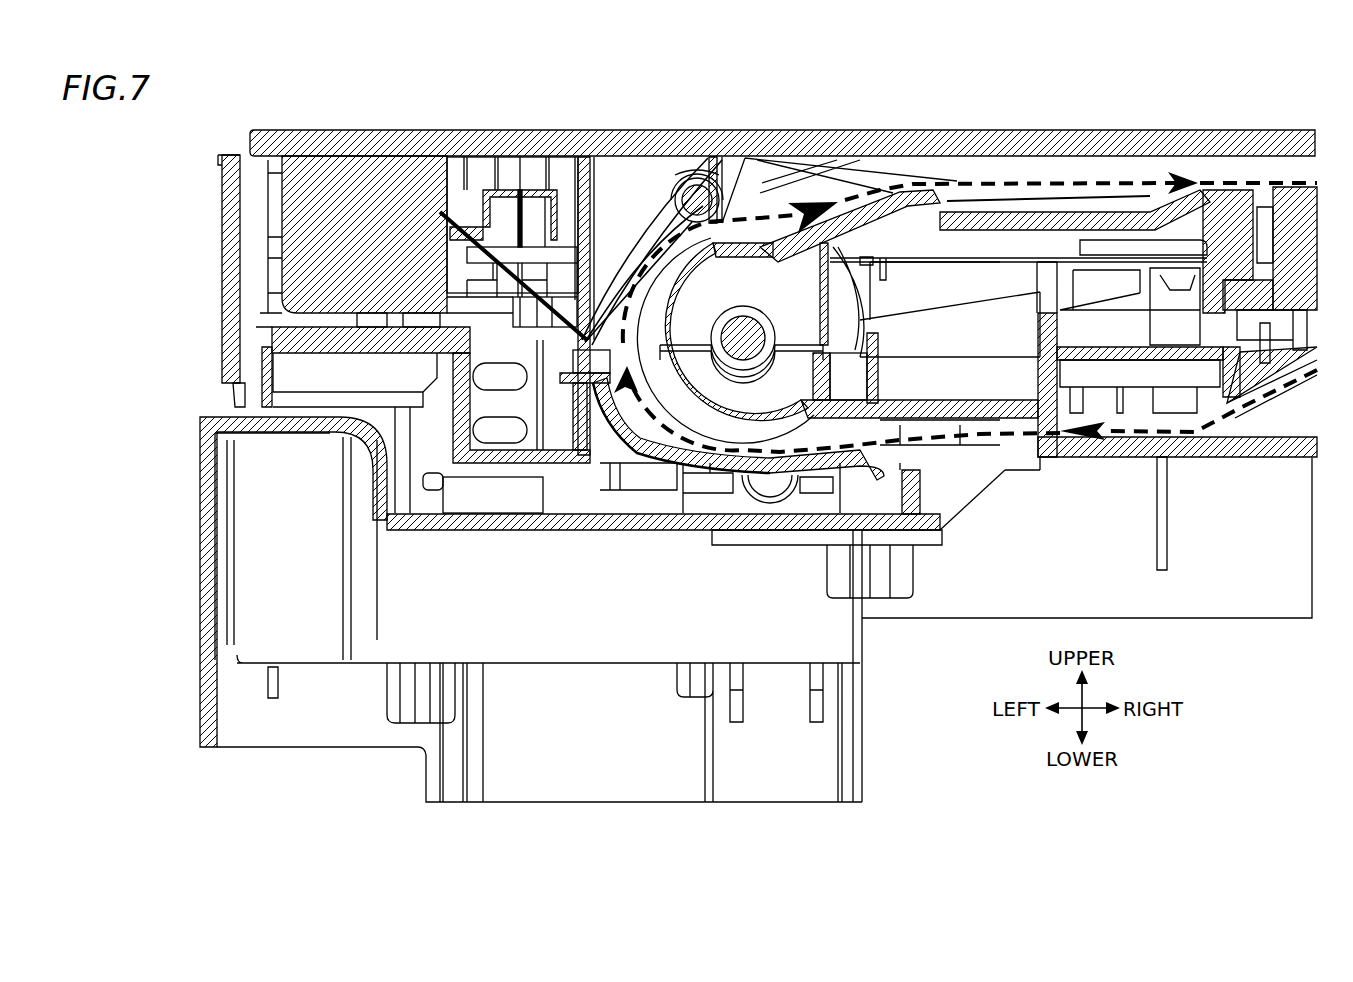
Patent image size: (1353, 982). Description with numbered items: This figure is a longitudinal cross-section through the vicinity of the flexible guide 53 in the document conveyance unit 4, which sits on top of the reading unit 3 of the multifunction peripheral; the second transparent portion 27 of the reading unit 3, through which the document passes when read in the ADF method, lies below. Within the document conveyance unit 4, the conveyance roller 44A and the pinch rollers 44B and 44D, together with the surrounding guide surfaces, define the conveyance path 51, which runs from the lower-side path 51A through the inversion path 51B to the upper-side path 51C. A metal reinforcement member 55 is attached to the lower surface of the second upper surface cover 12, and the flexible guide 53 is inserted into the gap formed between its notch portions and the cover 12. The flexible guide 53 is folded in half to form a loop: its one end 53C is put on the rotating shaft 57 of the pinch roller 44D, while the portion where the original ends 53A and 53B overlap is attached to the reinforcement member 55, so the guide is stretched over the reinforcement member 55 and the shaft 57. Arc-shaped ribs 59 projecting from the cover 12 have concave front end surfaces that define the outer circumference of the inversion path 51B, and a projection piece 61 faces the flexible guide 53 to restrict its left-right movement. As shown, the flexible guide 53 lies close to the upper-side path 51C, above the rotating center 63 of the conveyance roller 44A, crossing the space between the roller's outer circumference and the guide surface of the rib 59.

The reading unit 3 is at (207, 418).
The document conveyance unit 4 is at (222, 254).
The second upper surface cover 12 is at (957, 131).
The second transparent portion 27 is at (1119, 458).
The conveyance roller 44A is at (855, 320).
The pinch roller 44B is at (770, 510).
The pinch roller 44D is at (687, 173).
The conveyance path 51 is at (1225, 190).
The lower-side path 51A is at (947, 430).
The inversion path 51B is at (613, 400).
The upper-side path 51C is at (1053, 185).
The flexible guide 53 is at (647, 213).
The end of flexible guide 53A is at (456, 244).
The end of flexible guide 53B is at (471, 212).
The one end of flexible guide 53C is at (714, 160).
The reinforcement member 55 is at (562, 200).
The rotating shaft 57 is at (680, 233).
The rib 59 is at (633, 287).
The projection piece 61 is at (722, 187).
The rotating center 63 is at (762, 320).